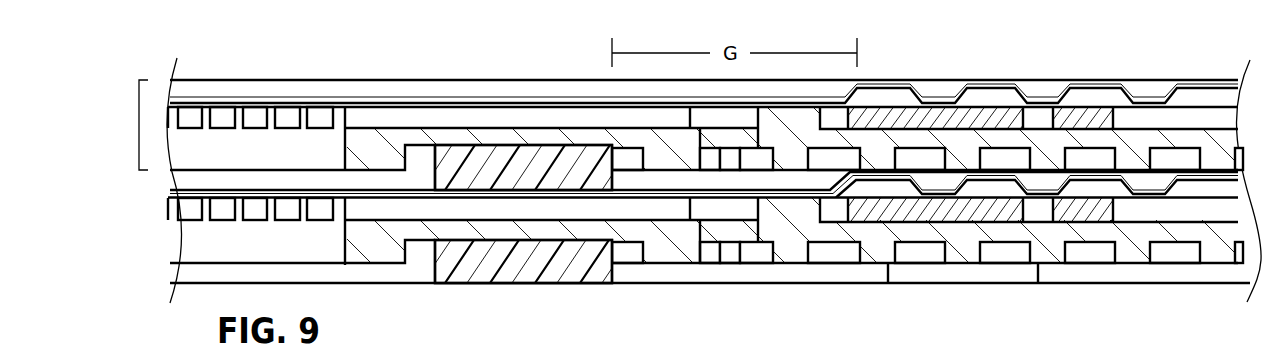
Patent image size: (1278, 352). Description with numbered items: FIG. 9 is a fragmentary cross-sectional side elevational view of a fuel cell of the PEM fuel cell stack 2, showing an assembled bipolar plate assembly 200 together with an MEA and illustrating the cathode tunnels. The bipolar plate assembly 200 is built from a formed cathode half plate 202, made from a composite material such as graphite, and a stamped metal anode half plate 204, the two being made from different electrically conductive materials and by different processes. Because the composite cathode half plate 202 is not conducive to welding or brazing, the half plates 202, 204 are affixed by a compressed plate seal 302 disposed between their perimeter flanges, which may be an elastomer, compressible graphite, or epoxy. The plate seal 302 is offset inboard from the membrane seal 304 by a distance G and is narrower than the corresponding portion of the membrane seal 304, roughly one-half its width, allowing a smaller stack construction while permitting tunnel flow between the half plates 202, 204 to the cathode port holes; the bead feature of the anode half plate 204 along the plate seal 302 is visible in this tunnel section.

The PEM fuel cell stack 2 is at (123, 71).
The bipolar plate assembly 200 is at (137, 127).
The formed cathode half plate 202 is at (1079, 138).
The stamped metal anode half plate 204 is at (1193, 85).
The plate seal 302 is at (932, 118).
The membrane seal 304 is at (525, 172).